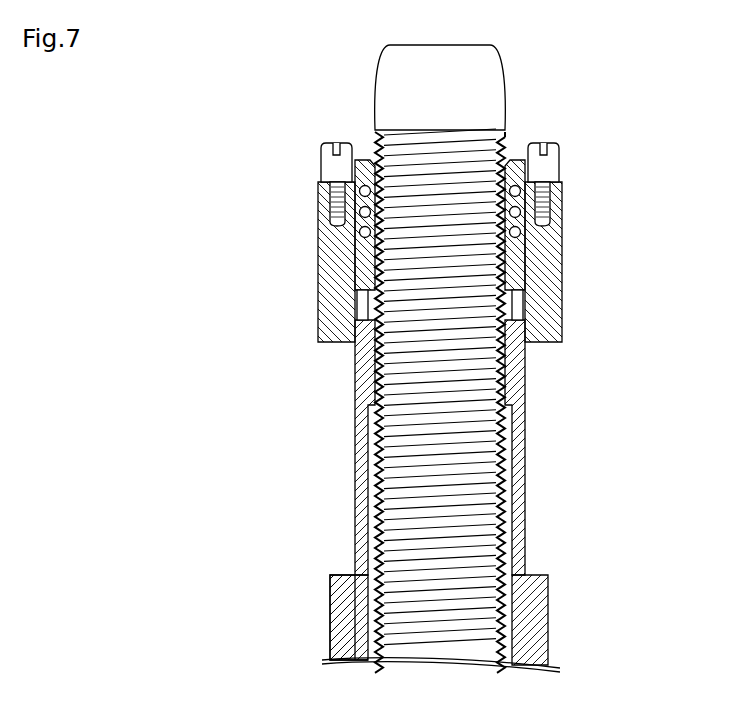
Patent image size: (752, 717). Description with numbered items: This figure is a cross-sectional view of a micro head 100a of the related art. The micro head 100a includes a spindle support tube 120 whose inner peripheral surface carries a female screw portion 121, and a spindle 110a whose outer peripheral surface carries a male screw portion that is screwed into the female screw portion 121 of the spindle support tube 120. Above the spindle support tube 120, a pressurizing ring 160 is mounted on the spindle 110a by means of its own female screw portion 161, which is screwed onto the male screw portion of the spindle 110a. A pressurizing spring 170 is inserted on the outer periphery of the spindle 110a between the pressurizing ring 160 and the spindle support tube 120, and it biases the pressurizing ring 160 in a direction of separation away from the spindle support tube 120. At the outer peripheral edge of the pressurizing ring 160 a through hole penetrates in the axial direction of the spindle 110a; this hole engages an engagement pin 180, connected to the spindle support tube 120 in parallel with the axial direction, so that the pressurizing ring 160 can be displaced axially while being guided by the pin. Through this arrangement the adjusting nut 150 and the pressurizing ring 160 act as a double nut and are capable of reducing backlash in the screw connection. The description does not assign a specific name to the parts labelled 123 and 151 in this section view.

The micro head 100a is at (600, 82).
The spindle 110a is at (437, 610).
The spindle support tube 120 is at (352, 602).
The female screw portion 121 is at (360, 360).
The groove 123 is at (356, 291).
The adjusting nut 150 is at (330, 196).
The toothed insert 151 is at (352, 247).
The pressurizing ring 160 is at (345, 166).
The female screw portion 161 is at (330, 156).
The pressurizing spring 170 is at (546, 205).
The engagement pin 180 is at (541, 175).